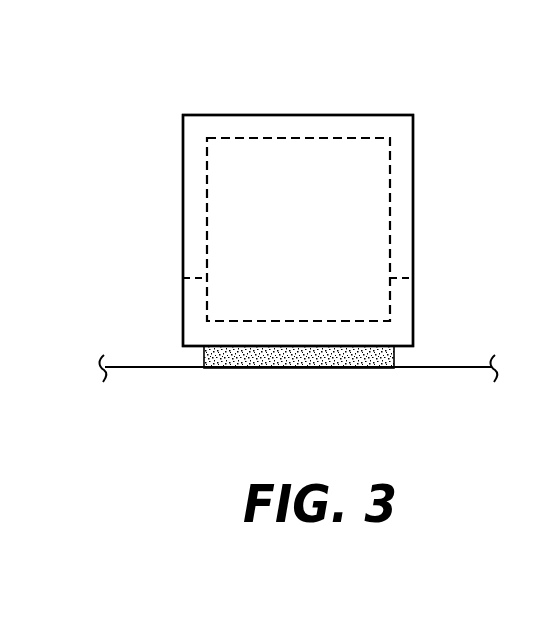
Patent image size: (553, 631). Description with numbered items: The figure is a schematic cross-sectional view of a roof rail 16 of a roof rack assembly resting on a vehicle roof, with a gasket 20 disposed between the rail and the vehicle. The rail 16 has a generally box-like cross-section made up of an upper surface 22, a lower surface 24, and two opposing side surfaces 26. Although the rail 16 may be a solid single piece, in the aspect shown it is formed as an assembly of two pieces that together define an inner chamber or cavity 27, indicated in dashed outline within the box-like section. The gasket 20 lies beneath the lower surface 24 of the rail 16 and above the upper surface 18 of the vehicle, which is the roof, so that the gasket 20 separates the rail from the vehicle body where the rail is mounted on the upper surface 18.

The rail 16 is at (426, 83).
The upper surface of the vehicle 18 is at (445, 367).
The gasket 20 is at (363, 368).
The upper surface 22 is at (278, 115).
The lower surface 24 is at (281, 349).
The opposing side surfaces 26 is at (183, 238).
The inner chamber or cavity 27 is at (304, 240).